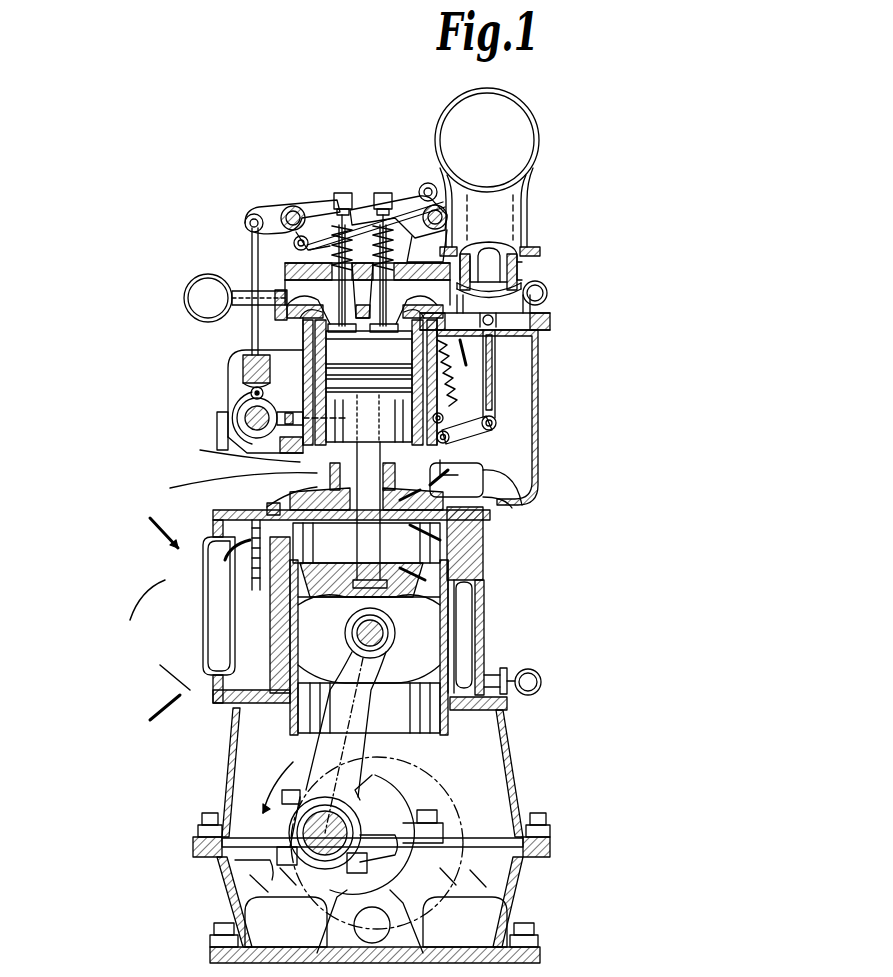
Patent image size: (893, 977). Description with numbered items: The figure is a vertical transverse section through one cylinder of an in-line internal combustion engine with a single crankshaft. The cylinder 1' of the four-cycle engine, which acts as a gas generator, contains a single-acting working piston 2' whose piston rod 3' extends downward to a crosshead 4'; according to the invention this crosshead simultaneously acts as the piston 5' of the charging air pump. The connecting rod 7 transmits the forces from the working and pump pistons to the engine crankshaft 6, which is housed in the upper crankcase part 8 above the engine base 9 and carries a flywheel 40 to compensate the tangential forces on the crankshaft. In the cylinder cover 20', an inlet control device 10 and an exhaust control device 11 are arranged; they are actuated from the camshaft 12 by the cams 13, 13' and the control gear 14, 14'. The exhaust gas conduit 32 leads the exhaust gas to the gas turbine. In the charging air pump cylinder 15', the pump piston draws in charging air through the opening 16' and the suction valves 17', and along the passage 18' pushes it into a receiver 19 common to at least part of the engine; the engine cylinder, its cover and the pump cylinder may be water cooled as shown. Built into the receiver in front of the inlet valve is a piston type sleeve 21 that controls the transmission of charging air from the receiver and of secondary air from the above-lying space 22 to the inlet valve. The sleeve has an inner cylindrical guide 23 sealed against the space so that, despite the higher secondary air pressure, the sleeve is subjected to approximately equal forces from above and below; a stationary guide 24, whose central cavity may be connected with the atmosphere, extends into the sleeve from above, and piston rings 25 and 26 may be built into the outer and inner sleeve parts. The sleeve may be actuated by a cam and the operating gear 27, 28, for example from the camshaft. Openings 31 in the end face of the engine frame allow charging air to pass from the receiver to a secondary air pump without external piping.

The cylinder 1' is at (369, 386).
The working piston 2' is at (369, 378).
The piston rod 3' is at (354, 515).
The crosshead 4' is at (520, 645).
The piston of the charging air pump 5' is at (440, 647).
The engine crankshaft 6 is at (372, 847).
The connecting rod 7 is at (350, 746).
The upper crankcase part 8 is at (530, 815).
The engine base 9 is at (507, 900).
The inlet control device 10 is at (392, 316).
The exhaust control device 11 is at (340, 316).
The camshaft 12 is at (250, 415).
The cam 13 is at (226, 408).
The cam 13' is at (213, 418).
The control gear 14 is at (336, 202).
The control gear 14' is at (398, 205).
The charging air pump cylinder 15' is at (441, 552).
The opening 16' is at (220, 611).
The suction valves 17' is at (220, 606).
The air passage 18' is at (369, 485).
The receiver 19 is at (505, 390).
The cylinder cover 20' is at (204, 305).
The piston type sleeve 21 is at (505, 292).
The space 22 is at (512, 133).
The inner cylindrical guide 23 is at (502, 258).
The stationary guide 24 is at (485, 243).
The piston rings 25 is at (524, 272).
The piston rings 26 is at (520, 298).
The operating gear 27 is at (448, 445).
The operating gear 28 is at (343, 418).
The openings 31 is at (470, 472).
The exhaust gas conduit 32 is at (205, 312).
The flywheel 40 is at (447, 792).